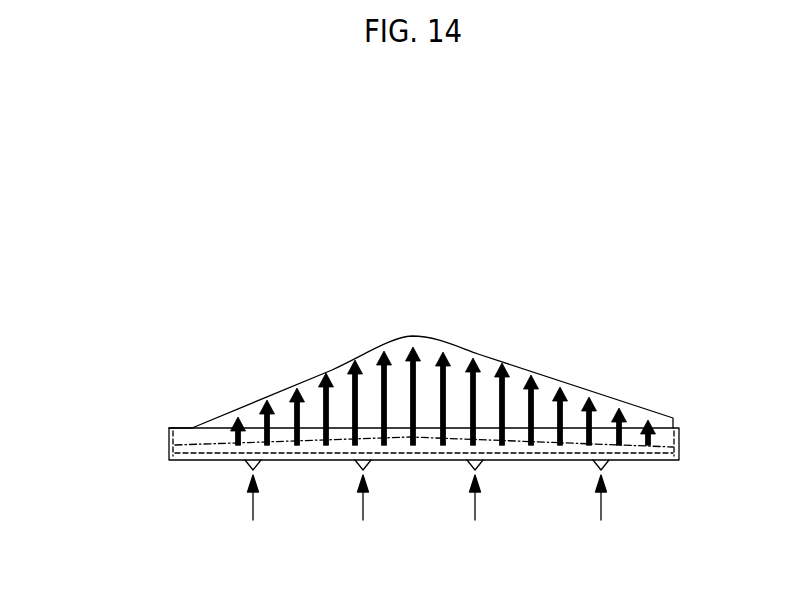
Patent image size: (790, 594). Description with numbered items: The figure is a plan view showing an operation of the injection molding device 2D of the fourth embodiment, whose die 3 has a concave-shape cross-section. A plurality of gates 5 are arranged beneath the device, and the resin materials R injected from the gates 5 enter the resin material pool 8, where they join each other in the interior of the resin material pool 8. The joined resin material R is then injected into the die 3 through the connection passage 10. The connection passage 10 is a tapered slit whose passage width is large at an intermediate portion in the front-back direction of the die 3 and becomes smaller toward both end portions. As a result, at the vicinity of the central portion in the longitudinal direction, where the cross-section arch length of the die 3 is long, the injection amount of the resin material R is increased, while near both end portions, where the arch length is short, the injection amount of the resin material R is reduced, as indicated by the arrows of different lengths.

The injection molding device 2D is at (138, 318).
The die 3 is at (352, 351).
The gate 5 is at (248, 467).
The resin material pool 8 is at (220, 428).
The connection passage 10 is at (430, 462).
The resin material R is at (297, 391).